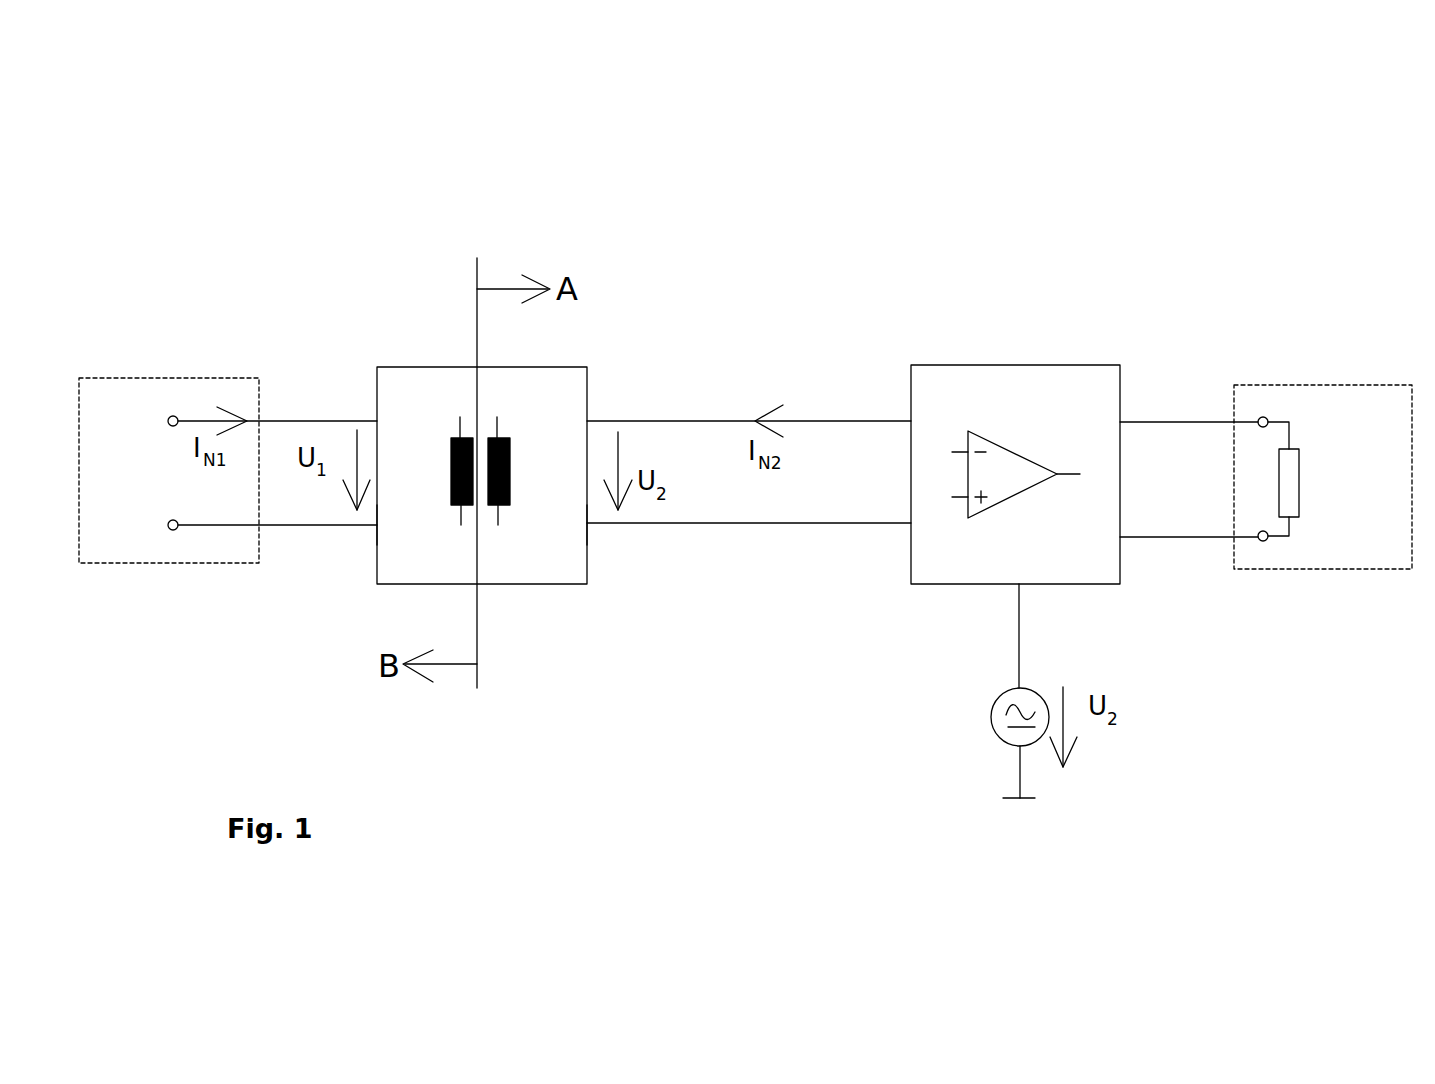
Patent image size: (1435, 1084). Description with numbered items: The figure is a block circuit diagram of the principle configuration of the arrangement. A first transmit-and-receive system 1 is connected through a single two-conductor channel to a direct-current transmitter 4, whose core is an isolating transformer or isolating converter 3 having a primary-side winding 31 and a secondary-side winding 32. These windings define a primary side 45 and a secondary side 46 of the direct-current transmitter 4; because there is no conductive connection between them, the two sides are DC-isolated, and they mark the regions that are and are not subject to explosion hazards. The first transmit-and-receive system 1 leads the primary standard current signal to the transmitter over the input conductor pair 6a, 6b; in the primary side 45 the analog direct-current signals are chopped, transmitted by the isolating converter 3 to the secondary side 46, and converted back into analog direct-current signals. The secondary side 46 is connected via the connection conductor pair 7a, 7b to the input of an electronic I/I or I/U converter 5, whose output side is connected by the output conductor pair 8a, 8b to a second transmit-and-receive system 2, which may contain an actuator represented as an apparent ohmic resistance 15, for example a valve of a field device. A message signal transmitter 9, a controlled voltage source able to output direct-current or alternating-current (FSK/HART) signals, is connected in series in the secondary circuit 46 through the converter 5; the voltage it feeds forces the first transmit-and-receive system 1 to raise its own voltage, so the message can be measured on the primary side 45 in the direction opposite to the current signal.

The first transmit-and-receive system 1 is at (162, 378).
The second transmit-and-receive system 2 is at (1323, 460).
The isolating transformer or isolating converter 3 is at (522, 462).
The direct-current transmitter 4 is at (557, 367).
The electronic I/I or I/U converter 5 is at (1082, 364).
The conductor section 6a is at (282, 421).
The conductor section 6b is at (291, 525).
The connection conductor 7a is at (703, 420).
The connection conductor 7b is at (722, 523).
The output conductor 8a is at (1175, 421).
The output conductor 8b is at (1157, 537).
The message signal transmitter 9 is at (980, 718).
The apparent ohmic resistance 15 is at (1292, 498).
The primary-side winding 31 is at (452, 490).
The secondary-side winding 32 is at (510, 490).
The primary side 45 is at (390, 500).
The secondary side 46 is at (568, 488).